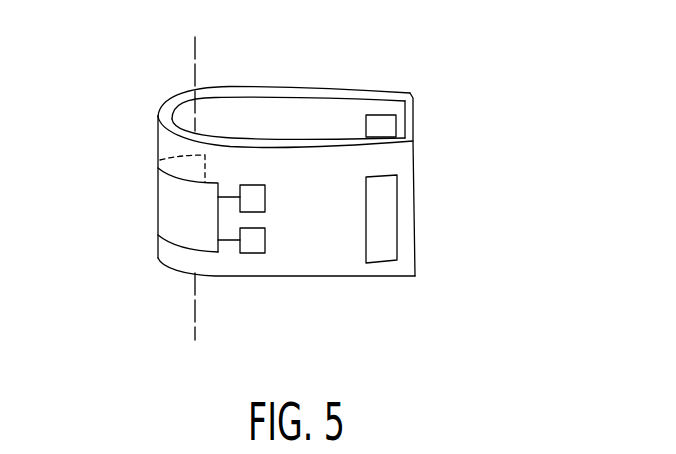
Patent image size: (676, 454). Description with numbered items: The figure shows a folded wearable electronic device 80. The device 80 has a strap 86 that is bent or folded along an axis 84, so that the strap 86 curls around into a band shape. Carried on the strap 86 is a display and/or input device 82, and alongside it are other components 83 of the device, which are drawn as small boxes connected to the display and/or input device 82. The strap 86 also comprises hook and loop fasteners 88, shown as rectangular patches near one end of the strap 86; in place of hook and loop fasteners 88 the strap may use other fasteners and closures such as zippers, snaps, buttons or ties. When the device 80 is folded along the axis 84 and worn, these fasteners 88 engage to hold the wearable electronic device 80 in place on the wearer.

The wearable electronic device 80 is at (291, 201).
The display and/or input device 82 is at (180, 207).
The other components 83 is at (253, 242).
The axis 84 is at (193, 81).
The strap 86 is at (300, 253).
The hook and loop fasteners 88 is at (381, 205).